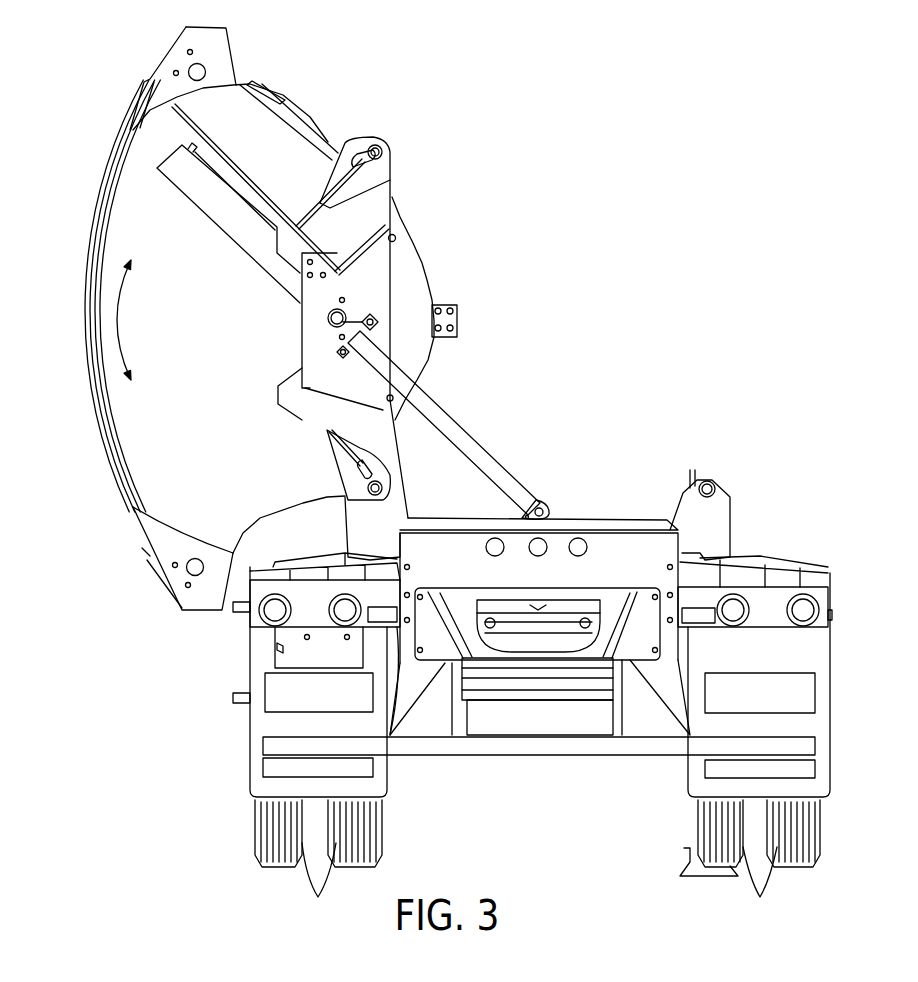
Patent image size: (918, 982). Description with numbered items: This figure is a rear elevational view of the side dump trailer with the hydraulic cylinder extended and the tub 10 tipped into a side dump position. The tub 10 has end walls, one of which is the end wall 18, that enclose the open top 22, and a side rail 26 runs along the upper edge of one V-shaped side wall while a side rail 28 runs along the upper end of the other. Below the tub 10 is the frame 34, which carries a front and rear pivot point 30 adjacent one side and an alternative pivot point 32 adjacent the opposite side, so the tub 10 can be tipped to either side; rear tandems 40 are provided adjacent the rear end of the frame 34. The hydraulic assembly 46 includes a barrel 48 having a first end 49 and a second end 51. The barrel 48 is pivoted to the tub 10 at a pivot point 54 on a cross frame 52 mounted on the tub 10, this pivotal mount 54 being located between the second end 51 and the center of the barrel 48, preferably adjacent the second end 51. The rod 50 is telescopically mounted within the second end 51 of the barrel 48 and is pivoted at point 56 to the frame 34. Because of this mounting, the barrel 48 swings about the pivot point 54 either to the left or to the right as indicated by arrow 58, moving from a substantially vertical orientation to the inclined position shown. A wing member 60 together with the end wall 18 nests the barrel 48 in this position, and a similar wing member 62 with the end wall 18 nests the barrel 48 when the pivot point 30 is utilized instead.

The tub 10 is at (90, 451).
The end wall 18 is at (166, 367).
The open top 22 is at (92, 410).
The side rail 26 is at (160, 580).
The side rail 28 is at (170, 52).
The front and rear pivot point 30 is at (708, 482).
The alternative pivot point 32 is at (385, 485).
The frame 34 is at (630, 520).
The rear tandems 40 is at (537, 866).
The hydraulic assembly 46 is at (232, 249).
The barrel 48 is at (222, 210).
The first end 49 is at (166, 156).
The rod 50 is at (467, 433).
The second end 51 is at (385, 330).
The cross frame 52 is at (300, 325).
The pivot point 54 is at (348, 310).
The pivot point 56 is at (537, 507).
The arrow 58 is at (115, 340).
The wing member 60 is at (292, 228).
The wing member 62 is at (278, 394).